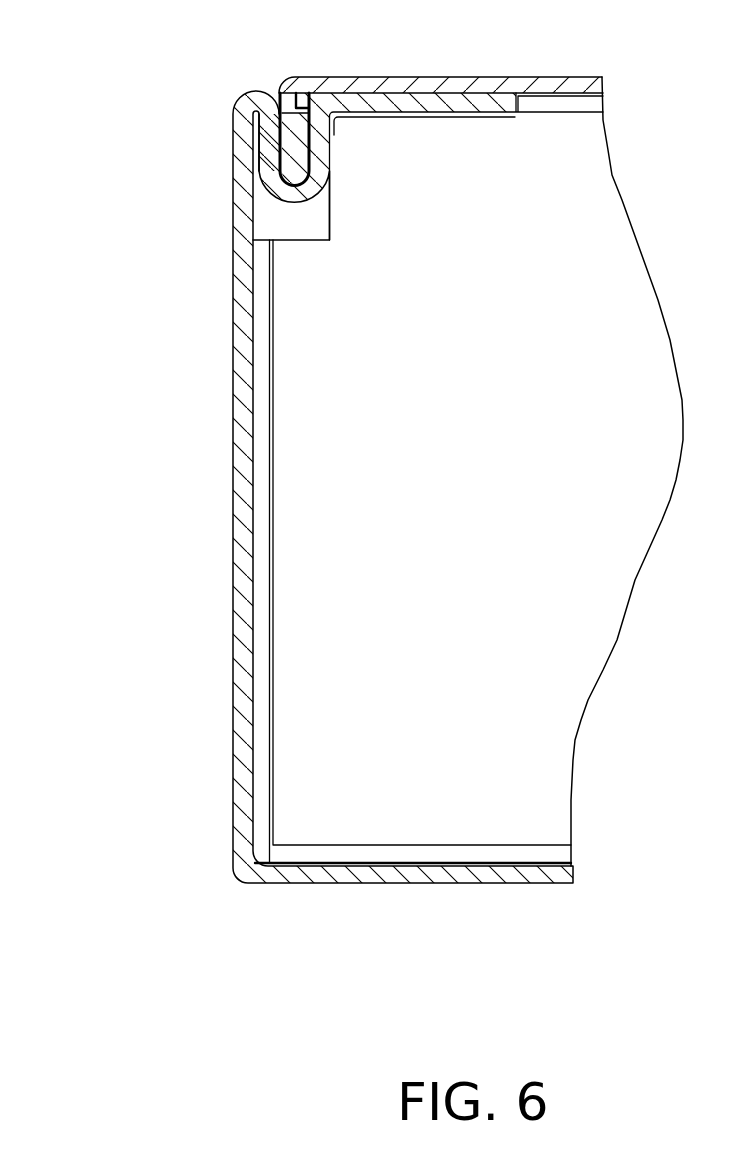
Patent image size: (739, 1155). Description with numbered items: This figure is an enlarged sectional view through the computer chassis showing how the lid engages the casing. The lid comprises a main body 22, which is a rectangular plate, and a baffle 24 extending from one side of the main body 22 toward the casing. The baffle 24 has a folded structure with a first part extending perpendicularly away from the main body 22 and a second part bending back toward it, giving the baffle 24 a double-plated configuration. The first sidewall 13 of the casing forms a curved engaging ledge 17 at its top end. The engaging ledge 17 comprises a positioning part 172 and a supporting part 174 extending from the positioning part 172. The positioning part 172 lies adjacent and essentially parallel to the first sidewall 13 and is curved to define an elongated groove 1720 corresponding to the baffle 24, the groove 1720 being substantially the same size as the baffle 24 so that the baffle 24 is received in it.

The first sidewall 13 is at (247, 464).
The engaging ledge 17 is at (128, 196).
The positioning part 172 is at (290, 194).
The elongated groove 1720 is at (277, 158).
The supporting part 174 is at (500, 103).
The main body 22 is at (465, 88).
The baffle 24 is at (288, 127).